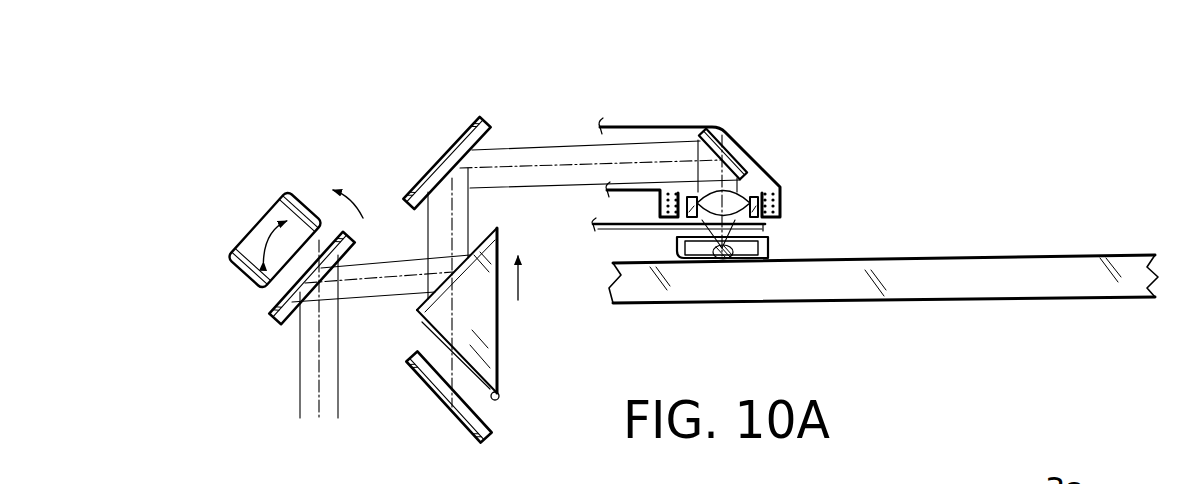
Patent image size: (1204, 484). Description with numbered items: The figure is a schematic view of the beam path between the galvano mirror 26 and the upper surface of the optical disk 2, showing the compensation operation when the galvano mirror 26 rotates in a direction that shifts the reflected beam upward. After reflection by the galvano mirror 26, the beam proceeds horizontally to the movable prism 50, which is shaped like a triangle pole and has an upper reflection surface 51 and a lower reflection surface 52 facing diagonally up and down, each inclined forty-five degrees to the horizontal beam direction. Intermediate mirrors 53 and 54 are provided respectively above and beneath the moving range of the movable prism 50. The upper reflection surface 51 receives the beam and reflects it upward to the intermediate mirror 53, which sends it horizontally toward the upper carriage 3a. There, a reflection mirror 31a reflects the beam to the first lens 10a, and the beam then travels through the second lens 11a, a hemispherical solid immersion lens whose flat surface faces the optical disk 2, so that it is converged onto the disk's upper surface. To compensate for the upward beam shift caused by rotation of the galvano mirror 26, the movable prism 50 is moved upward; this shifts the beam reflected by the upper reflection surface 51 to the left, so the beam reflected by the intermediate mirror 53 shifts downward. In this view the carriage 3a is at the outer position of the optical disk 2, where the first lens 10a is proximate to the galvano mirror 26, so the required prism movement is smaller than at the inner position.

The optical disk 2 is at (972, 258).
The upper carriage 3a is at (689, 100).
The reflection mirror 31a is at (725, 127).
The first lens 10a is at (748, 192).
The second lens 11a is at (727, 240).
The galvano mirror 26 is at (270, 316).
The movable prism 50 is at (494, 302).
The upper reflection surface 51 is at (490, 219).
The lower reflection surface 52 is at (499, 398).
The intermediate mirror 53 is at (430, 170).
The intermediate mirror 54 is at (460, 412).